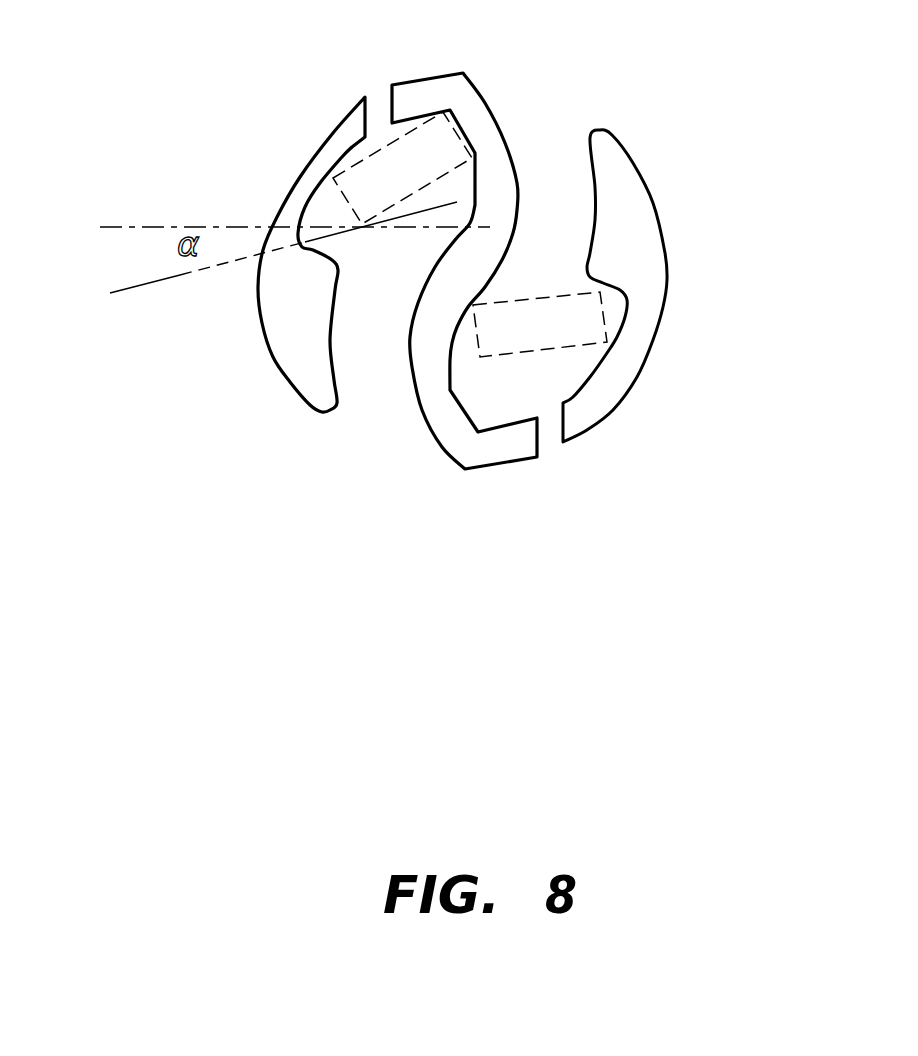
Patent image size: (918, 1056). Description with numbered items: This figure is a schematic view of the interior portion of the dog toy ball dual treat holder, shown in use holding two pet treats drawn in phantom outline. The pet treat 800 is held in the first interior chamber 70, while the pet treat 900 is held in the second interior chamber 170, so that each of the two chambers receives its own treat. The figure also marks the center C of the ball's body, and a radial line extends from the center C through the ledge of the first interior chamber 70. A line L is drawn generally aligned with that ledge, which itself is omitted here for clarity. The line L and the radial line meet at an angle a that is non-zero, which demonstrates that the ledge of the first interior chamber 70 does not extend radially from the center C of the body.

The first interior chamber 70 is at (370, 396).
The second interior chamber 170 is at (497, 397).
The pet treat 800 is at (386, 133).
The pet treat 900 is at (559, 357).
The center C is at (122, 224).
The angle a is at (185, 224).
The line L is at (127, 293).